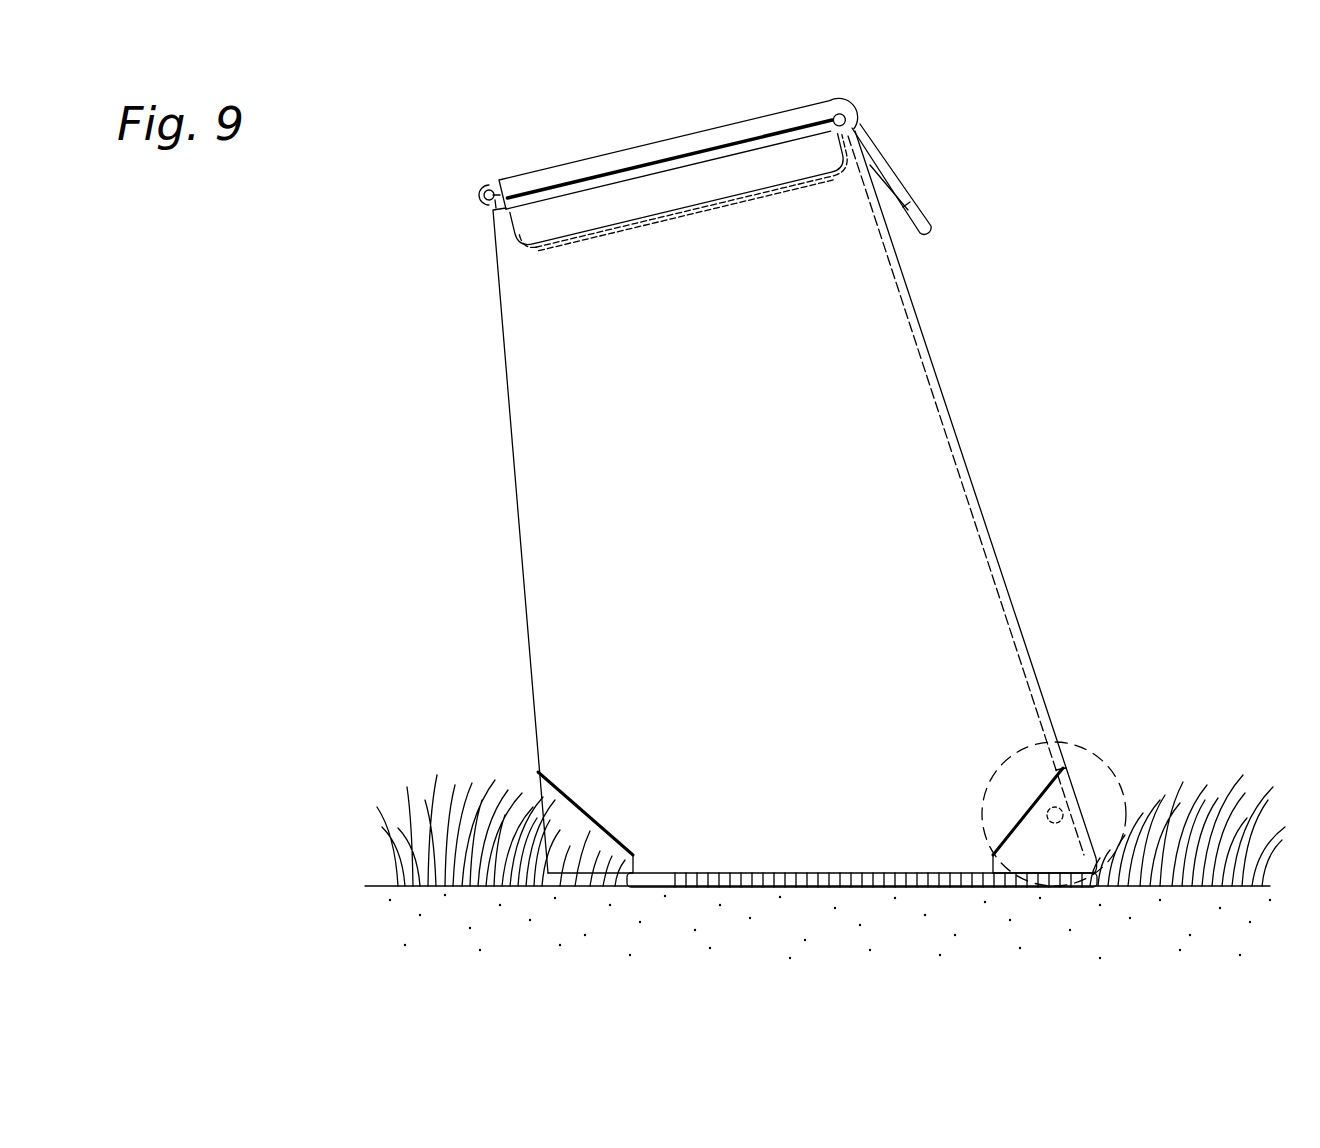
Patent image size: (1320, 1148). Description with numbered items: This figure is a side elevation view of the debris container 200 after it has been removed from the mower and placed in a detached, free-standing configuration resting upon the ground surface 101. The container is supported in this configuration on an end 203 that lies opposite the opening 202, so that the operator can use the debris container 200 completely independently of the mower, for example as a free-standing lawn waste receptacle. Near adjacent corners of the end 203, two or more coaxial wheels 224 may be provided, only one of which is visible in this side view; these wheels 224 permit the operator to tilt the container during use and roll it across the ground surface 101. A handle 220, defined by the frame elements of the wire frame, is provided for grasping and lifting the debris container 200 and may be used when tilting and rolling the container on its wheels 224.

The ground surface 101 is at (378, 886).
The debris container 200 is at (972, 445).
The opening 202 is at (567, 162).
The end 203 is at (862, 890).
The handle 220 is at (921, 210).
The wheels 224 is at (1115, 770).